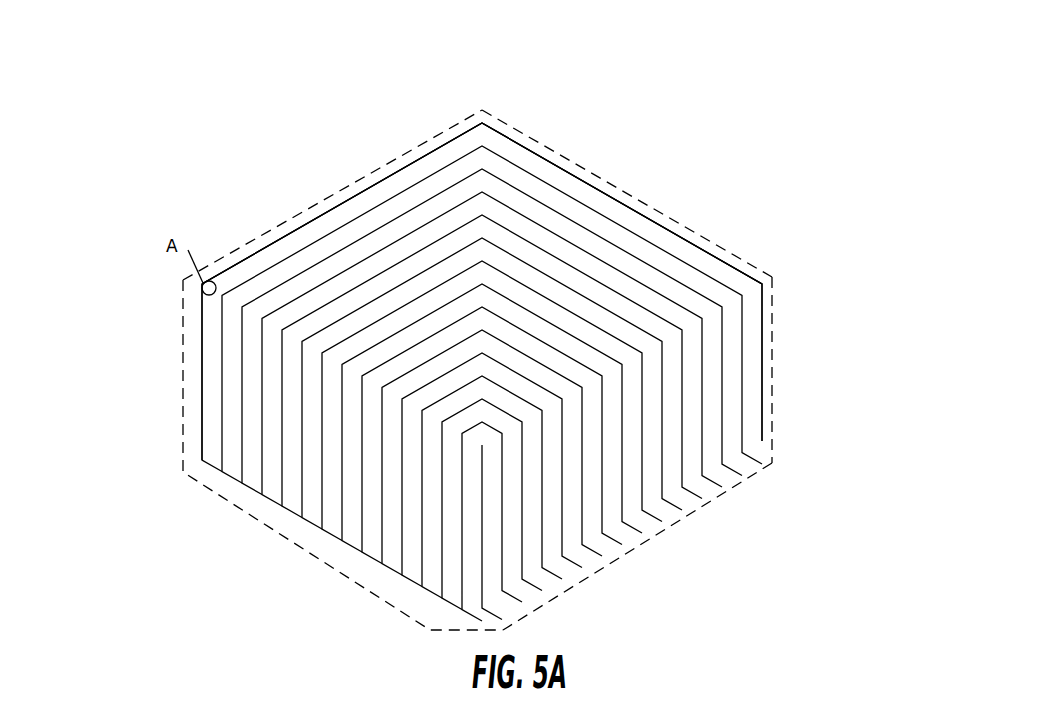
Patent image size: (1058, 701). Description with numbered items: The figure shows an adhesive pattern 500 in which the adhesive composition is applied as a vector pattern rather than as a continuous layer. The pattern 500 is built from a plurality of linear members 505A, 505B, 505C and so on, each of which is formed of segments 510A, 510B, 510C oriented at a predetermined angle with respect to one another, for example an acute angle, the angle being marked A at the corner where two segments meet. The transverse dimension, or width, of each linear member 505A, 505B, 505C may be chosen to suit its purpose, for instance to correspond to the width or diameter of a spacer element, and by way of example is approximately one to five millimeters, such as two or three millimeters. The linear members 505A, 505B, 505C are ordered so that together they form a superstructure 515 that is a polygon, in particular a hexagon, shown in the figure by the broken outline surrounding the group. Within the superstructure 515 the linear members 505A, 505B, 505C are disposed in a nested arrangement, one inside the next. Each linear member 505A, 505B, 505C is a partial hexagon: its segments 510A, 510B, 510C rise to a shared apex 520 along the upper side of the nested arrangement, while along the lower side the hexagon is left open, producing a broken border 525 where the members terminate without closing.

The adhesive pattern 500 is at (154, 111).
The linear member 505A is at (188, 395).
The linear member 505B is at (208, 435).
The linear member 505C is at (228, 480).
The segment 510A is at (202, 340).
The segment 510B is at (312, 221).
The segment 510C is at (590, 184).
The superstructure 515 is at (699, 217).
The apex 520 is at (480, 118).
The broken border 525 is at (604, 579).